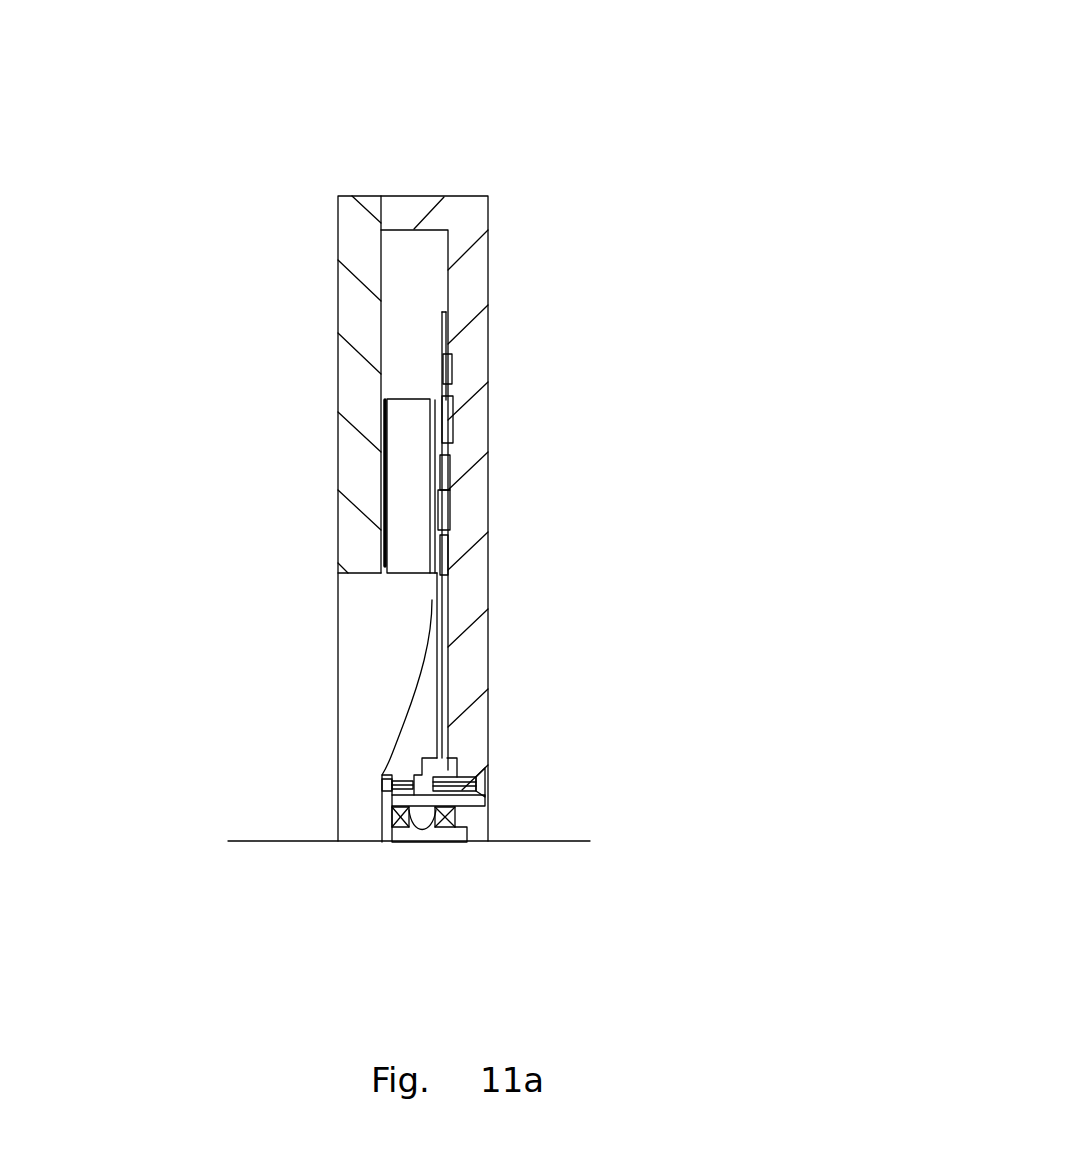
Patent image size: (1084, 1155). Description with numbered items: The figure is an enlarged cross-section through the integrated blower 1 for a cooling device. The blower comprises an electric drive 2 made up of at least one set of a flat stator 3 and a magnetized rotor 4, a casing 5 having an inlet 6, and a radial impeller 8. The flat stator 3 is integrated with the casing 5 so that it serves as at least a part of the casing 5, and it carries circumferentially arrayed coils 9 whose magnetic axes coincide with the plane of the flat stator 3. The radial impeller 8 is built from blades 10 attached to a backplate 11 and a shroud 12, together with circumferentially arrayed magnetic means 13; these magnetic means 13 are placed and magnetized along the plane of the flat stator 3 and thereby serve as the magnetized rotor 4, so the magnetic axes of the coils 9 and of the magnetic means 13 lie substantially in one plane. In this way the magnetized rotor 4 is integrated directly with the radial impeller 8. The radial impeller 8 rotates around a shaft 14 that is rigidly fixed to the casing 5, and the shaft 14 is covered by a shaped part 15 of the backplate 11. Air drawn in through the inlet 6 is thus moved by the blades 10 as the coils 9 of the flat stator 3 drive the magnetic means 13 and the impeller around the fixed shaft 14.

The integrated blower 1 is at (574, 122).
The electric drive 2 is at (445, 383).
The flat stator 3 is at (548, 511).
The magnetized rotor 4 is at (535, 589).
The casing 5 is at (355, 305).
The inlet 6 is at (268, 724).
The radial impeller 8 is at (298, 486).
The coils 9 is at (540, 434).
The blades 10 is at (266, 531).
The backplate 11 is at (542, 535).
The shroud 12 is at (329, 543).
The magnetic means 13 is at (527, 481).
The shaft 14 is at (520, 800).
The shaped part 15 is at (286, 725).